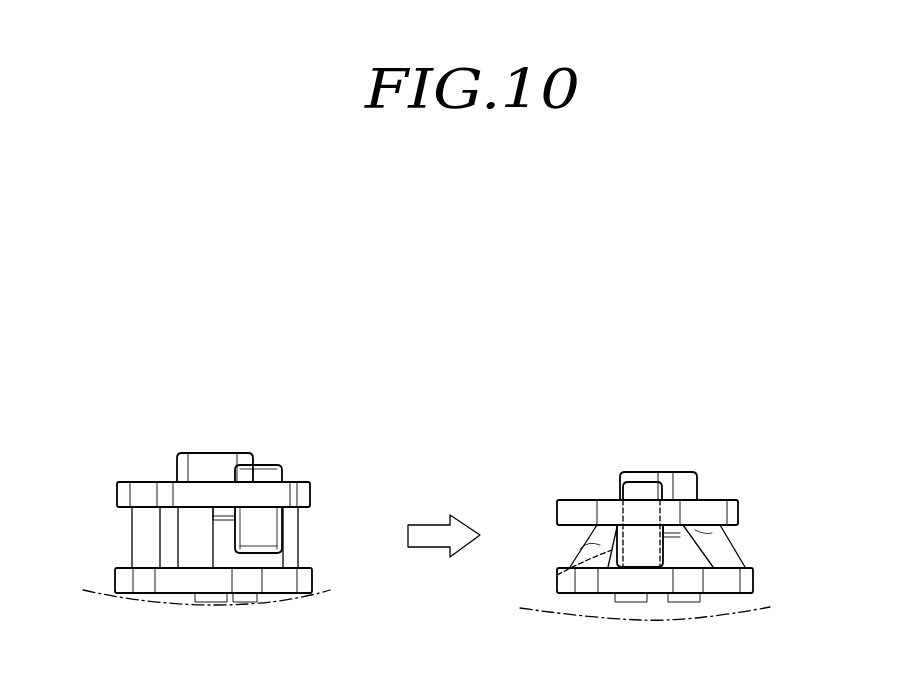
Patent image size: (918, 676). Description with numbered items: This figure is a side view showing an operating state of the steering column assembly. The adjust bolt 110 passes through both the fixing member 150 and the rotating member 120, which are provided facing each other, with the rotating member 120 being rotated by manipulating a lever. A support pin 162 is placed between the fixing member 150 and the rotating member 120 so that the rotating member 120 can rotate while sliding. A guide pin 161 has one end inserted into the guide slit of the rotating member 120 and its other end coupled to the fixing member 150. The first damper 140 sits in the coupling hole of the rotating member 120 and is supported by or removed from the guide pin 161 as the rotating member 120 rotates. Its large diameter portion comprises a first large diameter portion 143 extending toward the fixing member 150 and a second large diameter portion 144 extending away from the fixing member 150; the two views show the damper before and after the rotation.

The adjust bolt 110 is at (212, 460).
The rotating member 120 is at (183, 490).
The first damper 140 is at (297, 450).
The first large diameter portion 143 is at (270, 527).
The second large diameter portion 144 is at (258, 475).
The fixing member 150 is at (246, 580).
The guide pin 161 is at (190, 545).
The support pin 162 is at (145, 535).